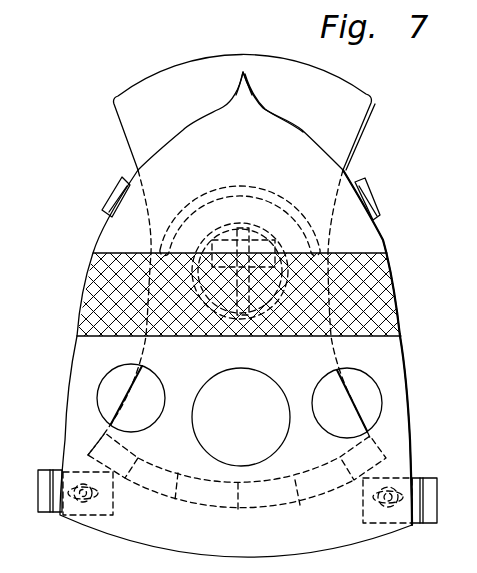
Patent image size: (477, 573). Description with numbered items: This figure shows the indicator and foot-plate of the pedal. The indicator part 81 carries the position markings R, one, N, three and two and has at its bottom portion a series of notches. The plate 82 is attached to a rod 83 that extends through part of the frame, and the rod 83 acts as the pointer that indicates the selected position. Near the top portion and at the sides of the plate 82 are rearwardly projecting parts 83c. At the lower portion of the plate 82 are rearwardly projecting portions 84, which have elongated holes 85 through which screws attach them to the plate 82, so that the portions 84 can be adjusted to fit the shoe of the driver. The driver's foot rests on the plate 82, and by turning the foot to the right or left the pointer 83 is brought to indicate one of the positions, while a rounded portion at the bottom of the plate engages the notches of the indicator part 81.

The indicator part 81 is at (359, 136).
The plate 82 is at (410, 393).
The rod 83 is at (246, 70).
The rearwardly projecting parts 83c is at (108, 194).
The rearwardly projecting portions 84 is at (53, 494).
The elongated holes 85 is at (103, 500).